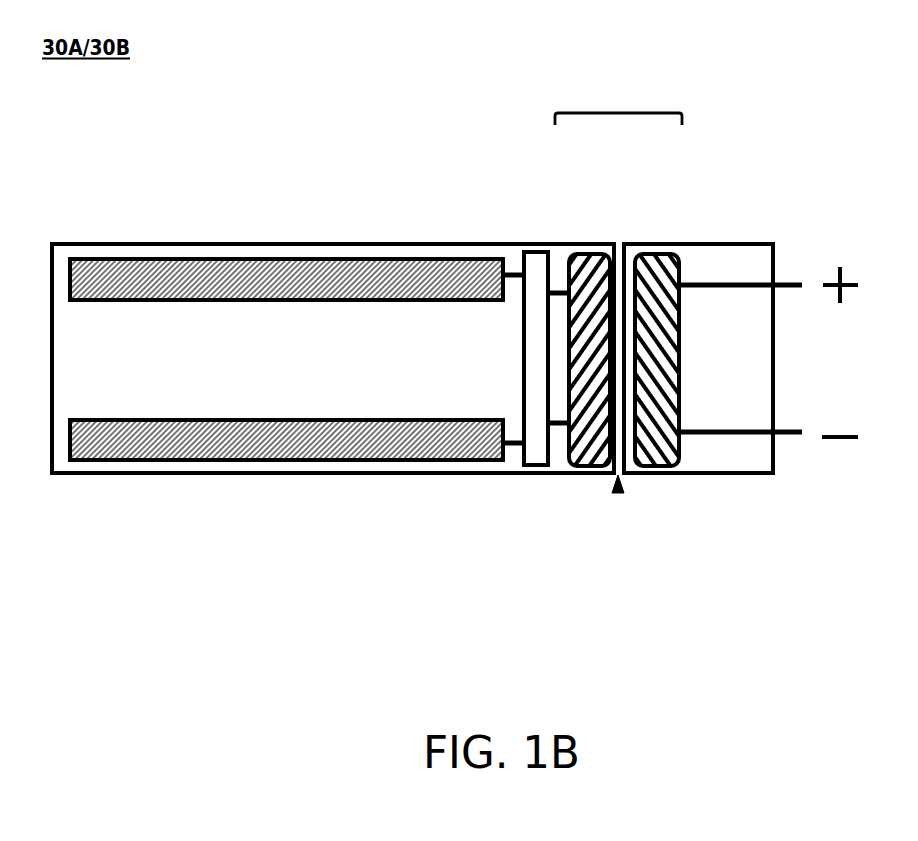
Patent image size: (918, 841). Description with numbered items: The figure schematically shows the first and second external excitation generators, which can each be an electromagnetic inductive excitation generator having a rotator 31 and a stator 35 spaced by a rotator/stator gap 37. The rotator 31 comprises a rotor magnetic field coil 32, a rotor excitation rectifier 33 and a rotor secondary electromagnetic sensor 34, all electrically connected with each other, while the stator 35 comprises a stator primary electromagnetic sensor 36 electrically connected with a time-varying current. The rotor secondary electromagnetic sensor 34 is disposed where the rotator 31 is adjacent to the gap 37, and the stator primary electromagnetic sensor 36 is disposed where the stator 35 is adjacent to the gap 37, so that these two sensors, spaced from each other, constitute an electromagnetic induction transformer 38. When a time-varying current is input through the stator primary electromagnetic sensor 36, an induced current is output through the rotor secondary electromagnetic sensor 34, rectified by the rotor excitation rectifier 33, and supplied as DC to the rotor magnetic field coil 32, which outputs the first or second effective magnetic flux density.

The rotator 31 is at (120, 242).
The rotor magnetic field coil 32 is at (332, 440).
The rotor excitation rectifier 33 is at (530, 262).
The rotor secondary electromagnetic sensor 34 is at (582, 262).
The stator 35 is at (757, 243).
The stator primary electromagnetic sensor 36 is at (652, 258).
The rotator/stator gap 37 is at (618, 490).
The electromagnetic induction transformer 38 is at (620, 112).